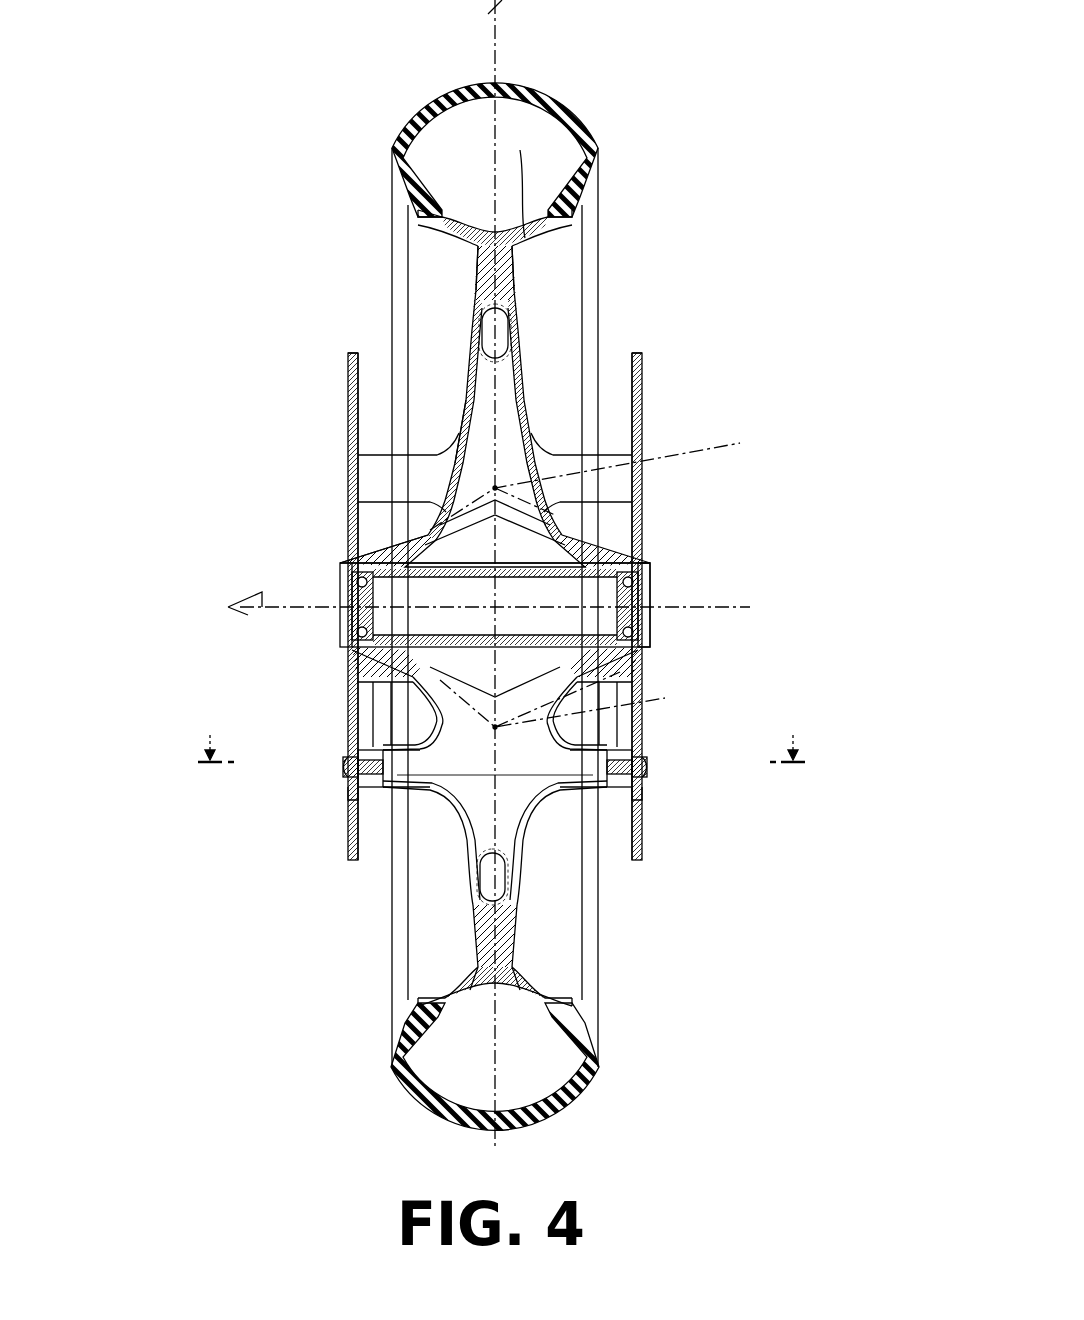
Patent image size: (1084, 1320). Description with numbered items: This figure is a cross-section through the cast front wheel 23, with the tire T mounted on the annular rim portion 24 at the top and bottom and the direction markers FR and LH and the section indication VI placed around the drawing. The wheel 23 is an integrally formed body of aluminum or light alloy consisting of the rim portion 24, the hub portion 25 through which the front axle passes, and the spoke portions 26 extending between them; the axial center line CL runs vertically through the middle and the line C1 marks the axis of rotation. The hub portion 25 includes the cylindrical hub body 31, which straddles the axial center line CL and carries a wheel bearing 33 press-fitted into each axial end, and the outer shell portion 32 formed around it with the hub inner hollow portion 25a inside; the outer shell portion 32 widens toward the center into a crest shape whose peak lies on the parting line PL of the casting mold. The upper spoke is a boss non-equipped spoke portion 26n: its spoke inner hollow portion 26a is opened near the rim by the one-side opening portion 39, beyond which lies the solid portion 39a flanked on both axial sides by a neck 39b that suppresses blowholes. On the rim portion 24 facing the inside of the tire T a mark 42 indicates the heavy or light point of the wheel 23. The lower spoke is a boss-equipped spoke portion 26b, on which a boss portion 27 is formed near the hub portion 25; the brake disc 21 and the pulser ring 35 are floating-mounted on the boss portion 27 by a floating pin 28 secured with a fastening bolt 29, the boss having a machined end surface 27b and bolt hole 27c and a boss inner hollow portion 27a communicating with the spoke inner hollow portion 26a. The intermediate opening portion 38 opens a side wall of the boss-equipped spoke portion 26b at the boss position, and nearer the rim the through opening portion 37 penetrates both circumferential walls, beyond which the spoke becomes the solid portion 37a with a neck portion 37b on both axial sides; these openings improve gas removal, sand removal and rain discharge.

The mark 42 is at (522, 235).
The rim portion 24 is at (580, 218).
The wheel 23 is at (430, 213).
The neck 39b is at (490, 247).
The solid portion 39a is at (517, 267).
The one-side opening portion 39 is at (503, 330).
The boss non-equipped spoke portion 26n is at (552, 400).
The spoke portion 26 is at (384, 549).
The brake disc 21 is at (346, 360).
The spoke inner hollow portion 26a is at (510, 408).
The boss portion 27 is at (400, 457).
The outer shell portion 32 is at (543, 497).
The hub inner hollow portion 25a is at (563, 543).
The hub portion 25 is at (613, 547).
The pulser ring 35 is at (652, 548).
The hub body 31 is at (555, 583).
The wheel bearing 33 is at (360, 615).
The floating pin 28 is at (350, 745).
The bolt hole 27c is at (348, 765).
The fastening bolt 29 is at (345, 768).
The end surface 27b is at (350, 790).
The boss inner hollow portion 27a is at (440, 820).
The boss-equipped spoke portion 26b is at (467, 833).
The intermediate opening portion 38 is at (525, 820).
The through opening portion 37 is at (503, 880).
The neck portion 37b is at (490, 950).
The solid portion 37a is at (515, 945).
The tire T is at (563, 113).
The axial center line CL is at (490, 70).
The line C1 is at (680, 605).
The parting line PL is at (599, 578).
The left-hand direction LH is at (231, 592).
The front direction FR is at (527, 9).
The section line VI is at (501, 733).